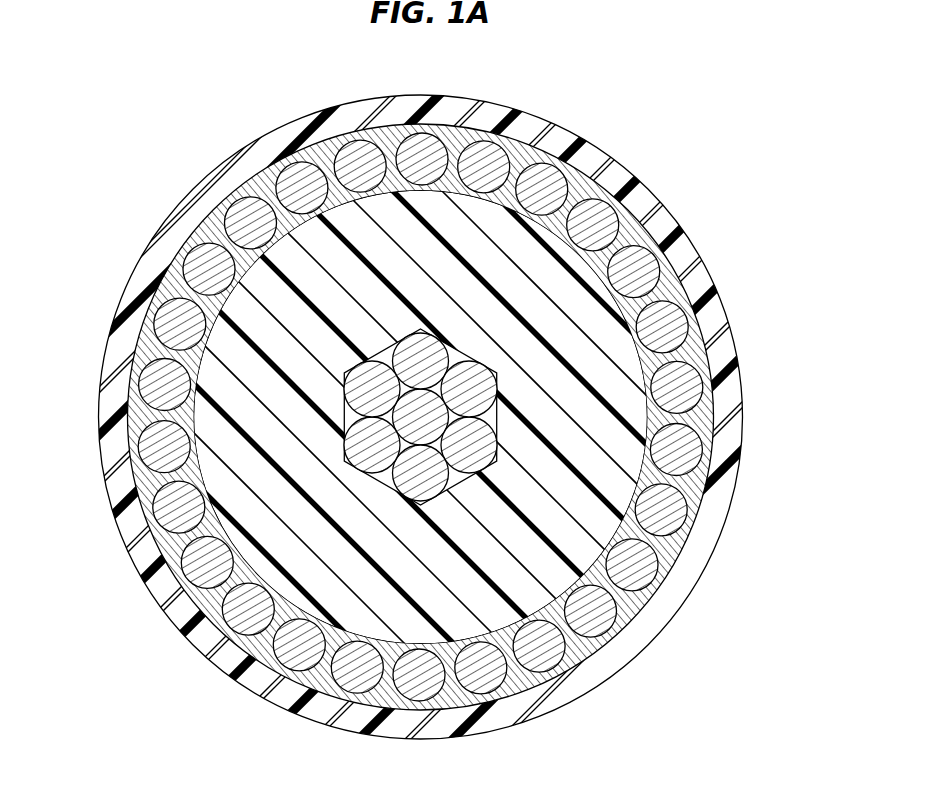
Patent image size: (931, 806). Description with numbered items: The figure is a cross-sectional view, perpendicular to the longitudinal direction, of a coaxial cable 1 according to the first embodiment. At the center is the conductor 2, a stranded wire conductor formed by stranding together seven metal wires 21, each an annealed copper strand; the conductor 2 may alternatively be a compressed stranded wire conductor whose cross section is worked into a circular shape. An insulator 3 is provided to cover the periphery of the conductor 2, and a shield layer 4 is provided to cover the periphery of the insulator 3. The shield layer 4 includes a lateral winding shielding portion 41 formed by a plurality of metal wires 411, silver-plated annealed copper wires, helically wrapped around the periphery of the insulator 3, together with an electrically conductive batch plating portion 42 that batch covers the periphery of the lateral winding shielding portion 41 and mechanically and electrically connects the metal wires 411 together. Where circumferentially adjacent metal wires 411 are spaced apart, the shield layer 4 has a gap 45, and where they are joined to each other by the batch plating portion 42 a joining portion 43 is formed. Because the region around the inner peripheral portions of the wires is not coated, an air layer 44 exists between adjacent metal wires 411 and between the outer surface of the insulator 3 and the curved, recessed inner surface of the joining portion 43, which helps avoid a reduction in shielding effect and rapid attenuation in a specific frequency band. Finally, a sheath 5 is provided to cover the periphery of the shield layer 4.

The coaxial cable 1 is at (213, 142).
The conductor 2 is at (458, 327).
The metal wire 21 is at (483, 385).
The insulator 3 is at (562, 343).
The shield layer 4 is at (470, 417).
The lateral winding shielding portion 41 is at (700, 292).
The metal wire 411 is at (684, 384).
The batch plating portion 42 is at (702, 333).
The joining portion 43 is at (710, 417).
The air layer 44 is at (712, 489).
The gap 45 is at (627, 600).
The sheath 5 is at (724, 431).